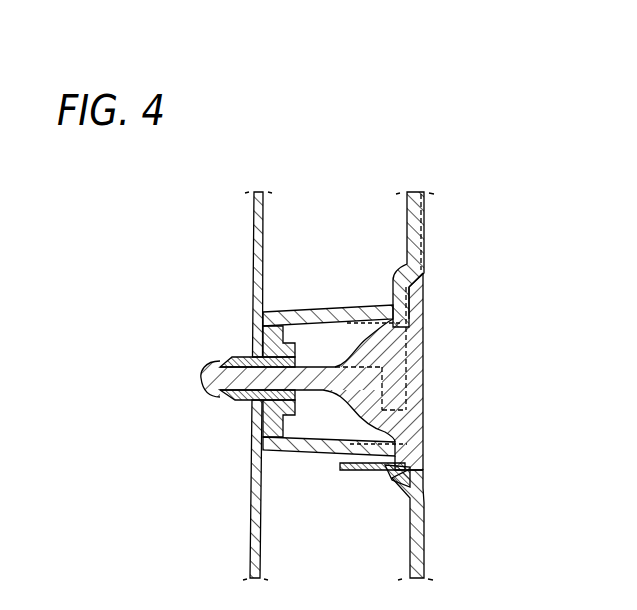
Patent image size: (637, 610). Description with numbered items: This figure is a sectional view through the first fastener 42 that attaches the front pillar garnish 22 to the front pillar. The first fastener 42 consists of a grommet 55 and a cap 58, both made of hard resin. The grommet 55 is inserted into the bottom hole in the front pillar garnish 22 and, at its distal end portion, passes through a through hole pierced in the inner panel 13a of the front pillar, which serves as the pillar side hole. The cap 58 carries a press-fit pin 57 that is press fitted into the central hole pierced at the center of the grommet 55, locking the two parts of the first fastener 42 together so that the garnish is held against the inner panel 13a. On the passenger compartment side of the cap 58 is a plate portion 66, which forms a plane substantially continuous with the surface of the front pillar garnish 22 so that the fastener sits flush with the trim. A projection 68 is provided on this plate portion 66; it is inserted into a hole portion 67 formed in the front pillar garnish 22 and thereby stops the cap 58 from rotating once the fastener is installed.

The inner panel 13a is at (249, 508).
The front pillar garnish 22 is at (430, 230).
The first fastener 42 is at (428, 362).
The grommet 55 is at (233, 356).
The press-fit pin 57 is at (308, 354).
The cap 58 is at (428, 399).
The plate portion 66 is at (425, 434).
The hole portion 67 is at (379, 478).
The projection 68 is at (356, 473).